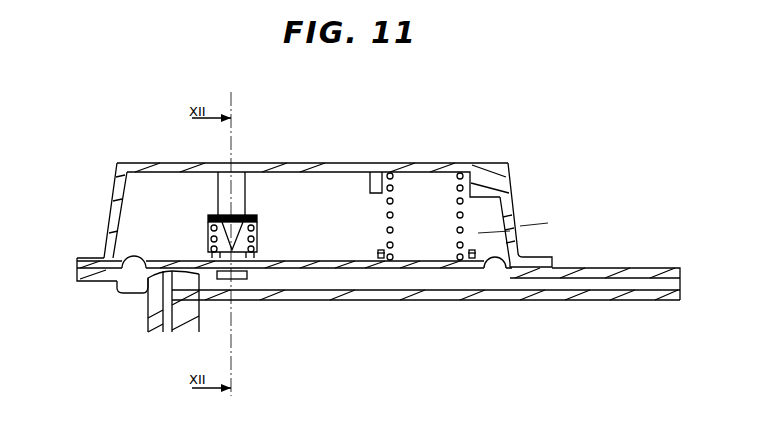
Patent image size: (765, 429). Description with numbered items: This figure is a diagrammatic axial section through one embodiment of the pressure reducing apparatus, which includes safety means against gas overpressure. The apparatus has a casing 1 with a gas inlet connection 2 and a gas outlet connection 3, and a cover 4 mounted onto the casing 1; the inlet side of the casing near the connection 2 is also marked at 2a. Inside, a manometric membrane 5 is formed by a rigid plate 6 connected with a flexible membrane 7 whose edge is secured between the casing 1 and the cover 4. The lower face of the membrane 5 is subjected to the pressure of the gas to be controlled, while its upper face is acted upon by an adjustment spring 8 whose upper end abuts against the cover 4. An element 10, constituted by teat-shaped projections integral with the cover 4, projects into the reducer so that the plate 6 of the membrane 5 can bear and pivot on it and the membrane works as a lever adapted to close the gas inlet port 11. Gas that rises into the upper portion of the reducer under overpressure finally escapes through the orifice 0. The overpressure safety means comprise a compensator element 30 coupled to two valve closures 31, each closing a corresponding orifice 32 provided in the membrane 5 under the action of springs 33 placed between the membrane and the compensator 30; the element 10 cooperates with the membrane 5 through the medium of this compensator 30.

The casing 1 is at (377, 293).
The gas inlet connection 2 is at (155, 333).
The flange 2a is at (113, 297).
The gas outlet connection 3 is at (621, 293).
The cover 4 is at (323, 163).
The manometric membrane 5 is at (314, 284).
The rigid plate 6 is at (358, 258).
The flexible membrane 7 is at (422, 266).
The adjustment spring 8 is at (458, 198).
The orifice 0 is at (516, 232).
The element 10 is at (248, 190).
The gas inlet port 11 is at (147, 318).
The compensator element 30 is at (208, 215).
The valve closure 31 is at (222, 279).
The orifice 32 is at (243, 279).
The spring 33 is at (257, 244).